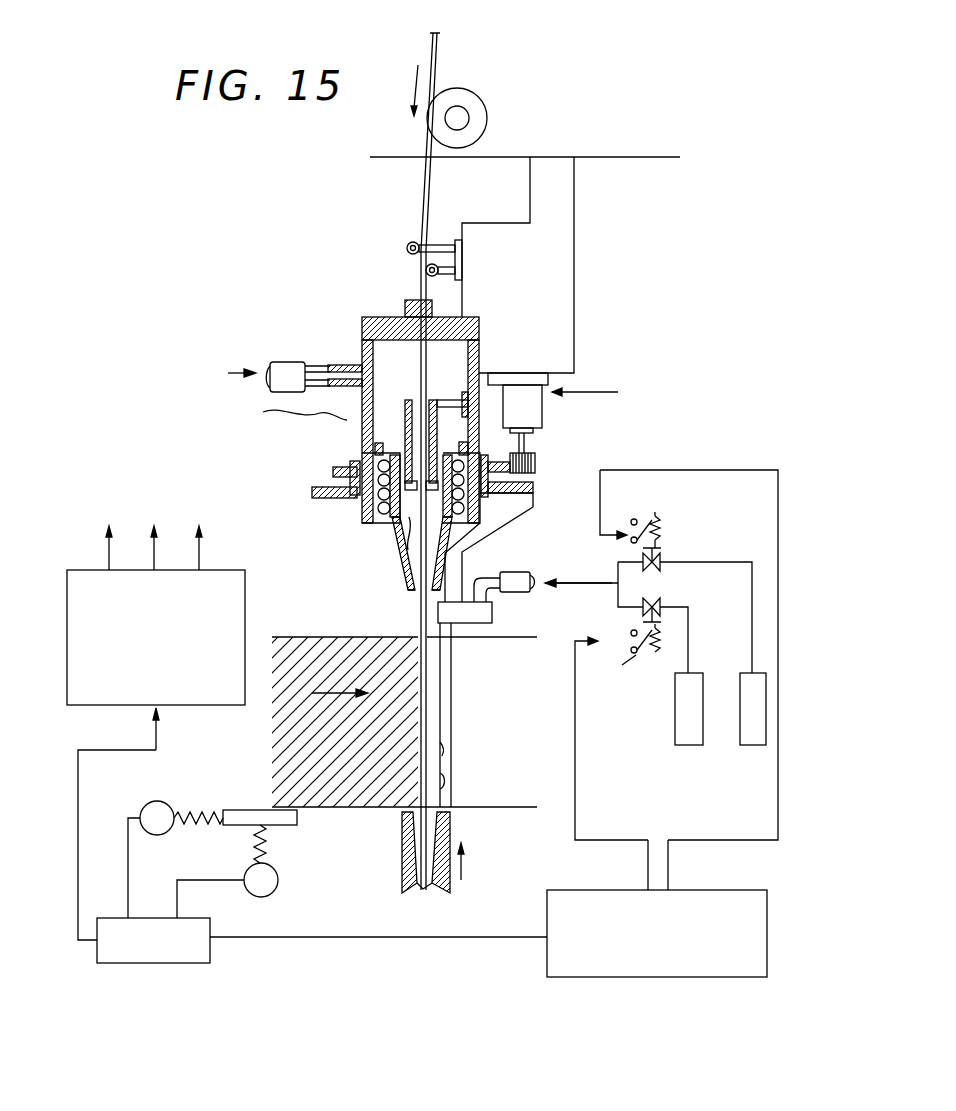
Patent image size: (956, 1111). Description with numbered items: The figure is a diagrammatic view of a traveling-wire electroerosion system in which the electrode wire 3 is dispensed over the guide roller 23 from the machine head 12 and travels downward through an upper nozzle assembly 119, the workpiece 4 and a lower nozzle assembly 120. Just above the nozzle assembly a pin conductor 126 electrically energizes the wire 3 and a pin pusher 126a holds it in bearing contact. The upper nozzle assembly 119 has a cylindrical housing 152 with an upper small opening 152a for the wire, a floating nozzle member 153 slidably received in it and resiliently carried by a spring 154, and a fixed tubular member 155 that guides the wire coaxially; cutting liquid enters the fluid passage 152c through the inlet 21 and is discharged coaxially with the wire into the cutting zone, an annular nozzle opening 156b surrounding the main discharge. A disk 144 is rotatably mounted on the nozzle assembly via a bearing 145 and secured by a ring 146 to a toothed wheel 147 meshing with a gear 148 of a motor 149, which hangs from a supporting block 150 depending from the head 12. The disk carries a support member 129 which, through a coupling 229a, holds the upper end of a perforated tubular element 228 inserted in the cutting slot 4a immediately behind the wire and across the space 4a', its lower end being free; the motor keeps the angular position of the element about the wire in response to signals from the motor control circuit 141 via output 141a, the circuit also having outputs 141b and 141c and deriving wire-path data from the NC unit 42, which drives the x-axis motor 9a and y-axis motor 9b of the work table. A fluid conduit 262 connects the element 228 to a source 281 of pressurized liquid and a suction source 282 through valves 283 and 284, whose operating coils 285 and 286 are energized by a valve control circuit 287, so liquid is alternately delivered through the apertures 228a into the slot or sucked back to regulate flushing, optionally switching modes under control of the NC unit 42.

The electrode wire 3 is at (428, 55).
The guide roller 23 is at (487, 110).
The machine head 12 is at (658, 150).
The supporting block 150 is at (576, 262).
The pin pusher 126a is at (407, 244).
The pin conductor 126 is at (425, 270).
The upper small opening 152a is at (405, 300).
The cylindrical housing 152 is at (364, 326).
The tubular member 155 is at (405, 403).
The annular nozzle opening 156b is at (403, 443).
The upper nozzle assembly 119 is at (252, 430).
The spring 154 is at (399, 570).
The bearing 145 is at (362, 513).
The fluid passage 152c is at (400, 574).
The nozzle member 153 is at (408, 578).
The toothed wheel 147 is at (340, 470).
The ring 146 is at (349, 478).
The disk 144 is at (318, 492).
The motor 149 is at (543, 408).
The output 141a is at (598, 384).
The control signal 141b is at (154, 552).
The control signal 141c is at (109, 550).
The gear 148 is at (536, 463).
The support member 129 is at (505, 540).
The coupling 229a is at (492, 617).
The fluid conduit 262 is at (522, 570).
The workpiece 4 is at (305, 640).
The cutting slot 4a is at (531, 753).
The space 4a' is at (474, 739).
The tubular element 228 is at (452, 693).
The apertures 228a is at (447, 782).
The lower nozzle assembly 120 is at (402, 862).
The inlet 21 is at (272, 360).
The motor control circuit 141 is at (208, 705).
The NC unit 42 is at (210, 958).
The x-axis motor 9a is at (170, 805).
The y-axis motor 9b is at (275, 890).
The valve control circuit 287 is at (547, 950).
The operating coil 285 is at (666, 505).
The valve 283 is at (662, 556).
The valve 284 is at (662, 596).
The operating coil 286 is at (631, 660).
The suction source 282 is at (673, 738).
The source of pressurized cutting liquid medium 281 is at (742, 738).